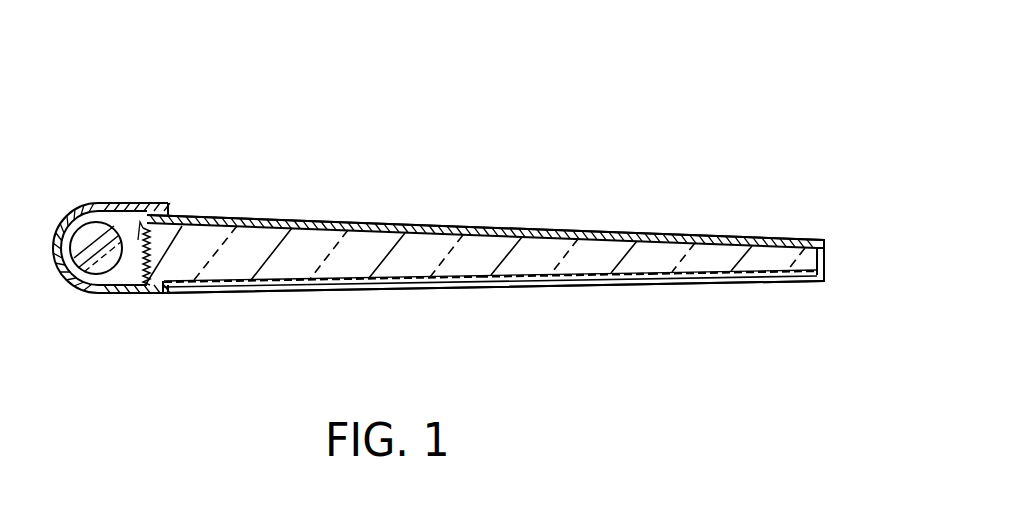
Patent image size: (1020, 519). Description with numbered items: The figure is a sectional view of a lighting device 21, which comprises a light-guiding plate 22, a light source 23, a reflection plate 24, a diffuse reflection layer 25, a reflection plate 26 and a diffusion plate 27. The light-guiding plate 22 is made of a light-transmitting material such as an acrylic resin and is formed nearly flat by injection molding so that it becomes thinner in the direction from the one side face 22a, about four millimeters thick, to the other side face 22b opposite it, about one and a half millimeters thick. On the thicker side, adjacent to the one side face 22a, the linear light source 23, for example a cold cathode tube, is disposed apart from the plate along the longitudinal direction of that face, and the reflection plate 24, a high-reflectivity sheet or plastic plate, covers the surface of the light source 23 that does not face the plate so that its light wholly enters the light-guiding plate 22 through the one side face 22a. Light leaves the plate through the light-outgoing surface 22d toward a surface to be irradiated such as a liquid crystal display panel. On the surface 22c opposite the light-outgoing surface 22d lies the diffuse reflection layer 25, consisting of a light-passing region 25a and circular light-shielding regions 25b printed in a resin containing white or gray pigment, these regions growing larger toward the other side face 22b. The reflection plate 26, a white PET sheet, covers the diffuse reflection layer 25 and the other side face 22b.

The lighting device 21 is at (699, 96).
The light-guiding plate 22 is at (437, 240).
The one side face 22a is at (141, 216).
The other side face 22b is at (823, 245).
The surface opposite to the light-outgoing surface 22c is at (356, 292).
The light-outgoing surface 22d is at (343, 232).
The light source 23 is at (91, 205).
The reflection plate 24 is at (116, 292).
The diffuse reflection layer 25 is at (455, 290).
The light-passing region 25a is at (613, 286).
The light-shielding regions 25b is at (688, 285).
The reflection plate 26 is at (535, 290).
The diffusion plate 27 is at (565, 235).